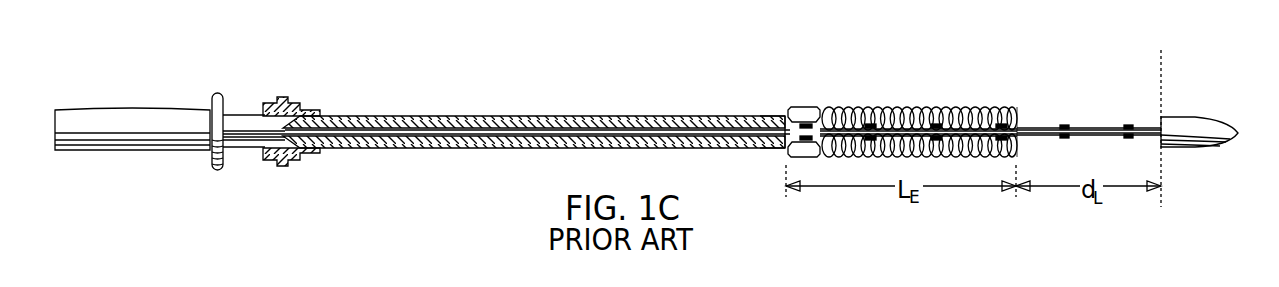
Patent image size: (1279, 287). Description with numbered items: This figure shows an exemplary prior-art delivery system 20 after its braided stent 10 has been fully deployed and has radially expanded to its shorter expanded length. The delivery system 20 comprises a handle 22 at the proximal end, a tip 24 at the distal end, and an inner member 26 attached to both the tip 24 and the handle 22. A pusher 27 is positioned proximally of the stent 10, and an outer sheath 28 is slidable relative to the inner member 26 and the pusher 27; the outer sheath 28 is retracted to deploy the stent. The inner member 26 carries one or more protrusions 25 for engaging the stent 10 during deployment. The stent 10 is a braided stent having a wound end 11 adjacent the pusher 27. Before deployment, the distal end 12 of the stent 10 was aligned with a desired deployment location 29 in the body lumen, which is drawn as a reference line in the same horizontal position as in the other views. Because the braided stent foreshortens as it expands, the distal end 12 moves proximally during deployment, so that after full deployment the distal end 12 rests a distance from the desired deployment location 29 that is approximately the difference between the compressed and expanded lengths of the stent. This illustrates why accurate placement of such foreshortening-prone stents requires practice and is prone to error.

The delivery system 20 is at (476, 55).
The handle 22 is at (133, 117).
The outer sheath 28 is at (386, 115).
The pusher 27 is at (754, 120).
The wound end 11 is at (810, 107).
The stent 10 is at (909, 107).
The distal end 12 is at (1016, 88).
The inner member 26 is at (1085, 126).
The protrusion 25 is at (1128, 125).
The tip 24 is at (1224, 142).
The desired deployment location 29 is at (1164, 57).